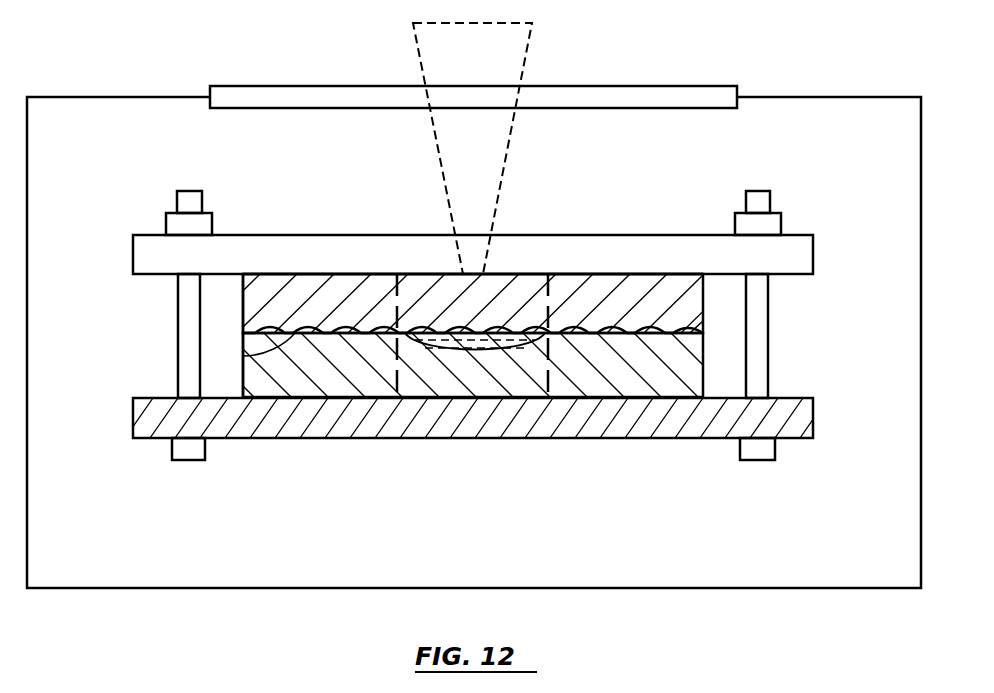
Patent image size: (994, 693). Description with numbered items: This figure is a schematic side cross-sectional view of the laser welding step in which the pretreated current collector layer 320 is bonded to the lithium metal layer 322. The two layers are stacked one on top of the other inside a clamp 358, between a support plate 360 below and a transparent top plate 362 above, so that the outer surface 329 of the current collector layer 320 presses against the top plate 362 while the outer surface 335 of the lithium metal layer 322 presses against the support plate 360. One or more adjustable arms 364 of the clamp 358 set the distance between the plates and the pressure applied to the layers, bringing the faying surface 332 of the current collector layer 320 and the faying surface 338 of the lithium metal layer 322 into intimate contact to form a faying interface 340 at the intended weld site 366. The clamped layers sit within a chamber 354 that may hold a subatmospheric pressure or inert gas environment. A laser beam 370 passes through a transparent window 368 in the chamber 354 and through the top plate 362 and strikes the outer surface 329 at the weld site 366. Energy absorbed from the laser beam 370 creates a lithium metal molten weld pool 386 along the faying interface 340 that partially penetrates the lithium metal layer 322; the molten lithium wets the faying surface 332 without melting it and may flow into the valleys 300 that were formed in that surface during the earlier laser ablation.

The chamber 354 is at (105, 97).
The transparent window 368 is at (278, 86).
The laser beam 370 is at (535, 48).
The transparent top plate 362 is at (325, 236).
The support plate 360 is at (265, 438).
The outer surface of the lithium metal layer 335 is at (367, 398).
The clamp 358 is at (148, 232).
The adjustable arms 364 is at (178, 302).
The current collector layer 320 is at (705, 302).
The lithium metal layer 322 is at (705, 362).
The weld site 366 is at (563, 300).
The outer surface of the current collector layer 329 is at (640, 290).
The valleys 300 is at (606, 333).
The faying interface 340 is at (242, 334).
The faying surface of the current collector layer 332 is at (243, 356).
The faying surface of the lithium metal layer 338 is at (705, 318).
The lithium metal molten weld pool 386 is at (475, 357).